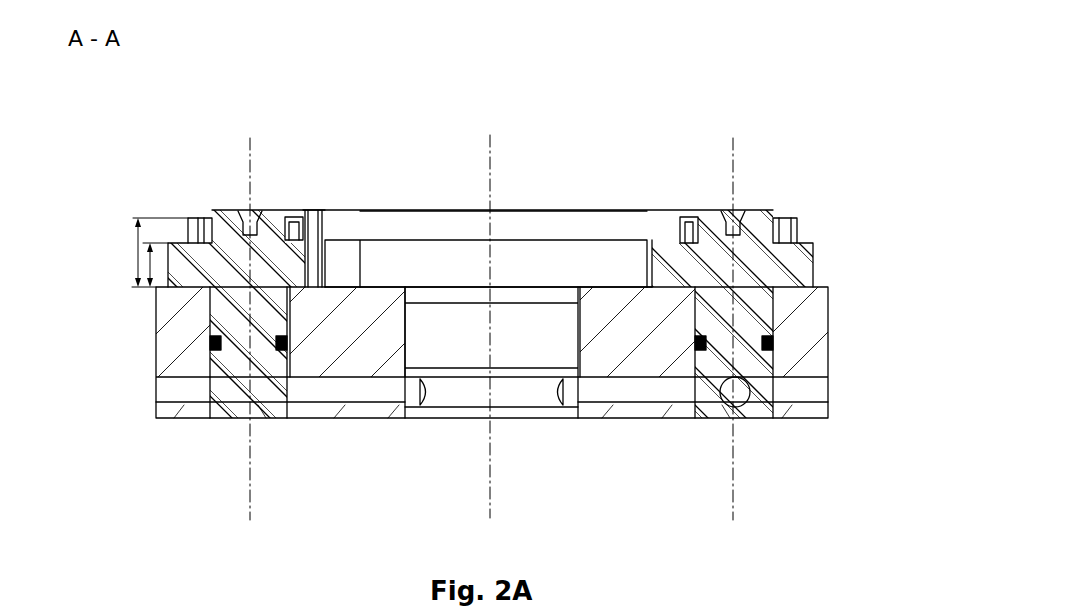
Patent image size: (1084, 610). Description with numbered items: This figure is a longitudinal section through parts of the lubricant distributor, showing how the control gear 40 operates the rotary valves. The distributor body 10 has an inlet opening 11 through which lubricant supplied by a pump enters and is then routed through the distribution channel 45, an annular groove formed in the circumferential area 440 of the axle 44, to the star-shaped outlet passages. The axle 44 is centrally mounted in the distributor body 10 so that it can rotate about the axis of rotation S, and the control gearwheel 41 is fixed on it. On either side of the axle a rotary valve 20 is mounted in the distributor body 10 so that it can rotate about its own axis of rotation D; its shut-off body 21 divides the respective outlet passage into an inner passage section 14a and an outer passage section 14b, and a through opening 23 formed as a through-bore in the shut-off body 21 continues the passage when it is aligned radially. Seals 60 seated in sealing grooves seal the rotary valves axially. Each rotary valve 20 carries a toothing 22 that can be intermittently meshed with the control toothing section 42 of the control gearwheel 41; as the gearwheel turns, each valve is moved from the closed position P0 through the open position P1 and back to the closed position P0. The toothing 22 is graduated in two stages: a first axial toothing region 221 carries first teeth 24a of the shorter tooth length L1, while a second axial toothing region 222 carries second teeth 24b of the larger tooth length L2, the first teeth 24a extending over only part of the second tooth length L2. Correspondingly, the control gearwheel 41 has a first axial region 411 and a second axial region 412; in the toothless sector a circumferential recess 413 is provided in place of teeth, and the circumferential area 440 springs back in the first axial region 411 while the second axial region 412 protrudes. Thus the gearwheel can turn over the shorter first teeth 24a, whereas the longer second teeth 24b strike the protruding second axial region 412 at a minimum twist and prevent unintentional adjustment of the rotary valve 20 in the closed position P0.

The distributor body 10 is at (817, 338).
The inlet opening 11 is at (155, 390).
The inner passage section 14a is at (358, 403).
The outer passage section 14b is at (186, 390).
The rotary valve 20 is at (201, 184).
The shut-off body 21 is at (267, 367).
The toothing 22 is at (176, 199).
The through opening 23 is at (230, 393).
The first teeth 24a is at (812, 262).
The second teeth 24b is at (790, 218).
The control gear 40 is at (320, 102).
The control gearwheel 41 is at (518, 222).
The control toothing section 42 is at (322, 190).
The axle 44 is at (440, 407).
The distribution channel 45 is at (416, 400).
The seal 60 is at (217, 337).
The first axial toothing region 221 is at (113, 268).
The second axial toothing region 222 is at (113, 233).
The first axial region 411 is at (614, 272).
The second axial region 412 is at (614, 237).
The circumferential recess 413 is at (338, 265).
The circumferential area 440 is at (532, 348).
The axis of rotation D is at (255, 147).
The axis of rotation S is at (490, 158).
The first tooth length L1 is at (133, 273).
The second tooth length L2 is at (135, 235).
The closed position P0 is at (720, 182).
The open position P1 is at (230, 183).